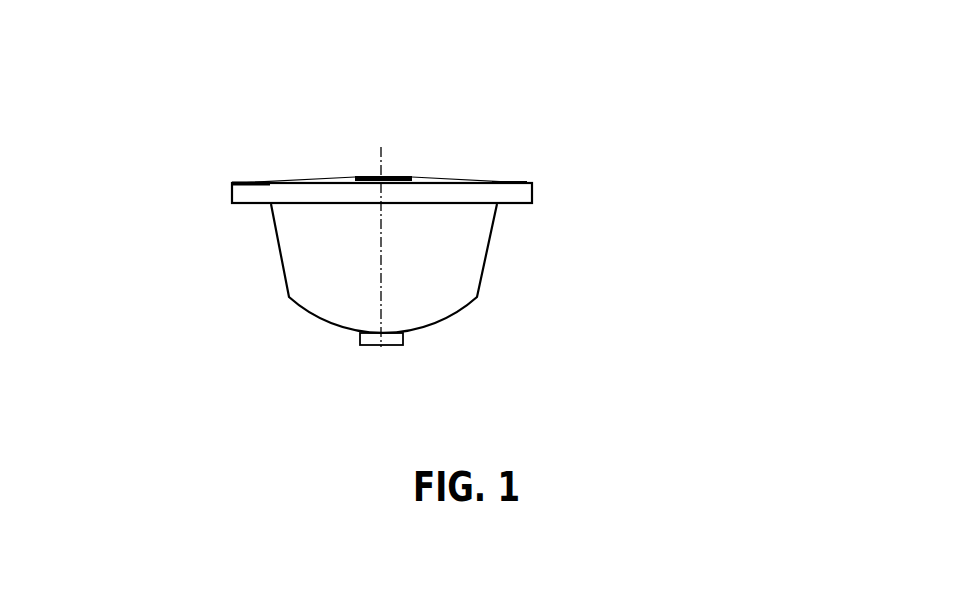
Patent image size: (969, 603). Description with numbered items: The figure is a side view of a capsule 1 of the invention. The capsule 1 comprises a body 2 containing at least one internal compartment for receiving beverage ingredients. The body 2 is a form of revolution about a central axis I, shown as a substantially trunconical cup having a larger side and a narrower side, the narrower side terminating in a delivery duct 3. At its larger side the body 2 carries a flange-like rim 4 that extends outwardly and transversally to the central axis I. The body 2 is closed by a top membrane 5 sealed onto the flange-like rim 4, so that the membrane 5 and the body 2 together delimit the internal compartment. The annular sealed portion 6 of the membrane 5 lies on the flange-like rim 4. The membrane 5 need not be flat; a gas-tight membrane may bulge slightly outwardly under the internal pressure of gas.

The capsule 1 is at (362, 219).
The body 2 is at (482, 272).
The delivery duct 3 is at (388, 342).
The flange-like rim 4 is at (243, 197).
The top membrane 5 is at (435, 176).
The annular sealed portion 6 is at (516, 181).
The central axis I is at (378, 155).